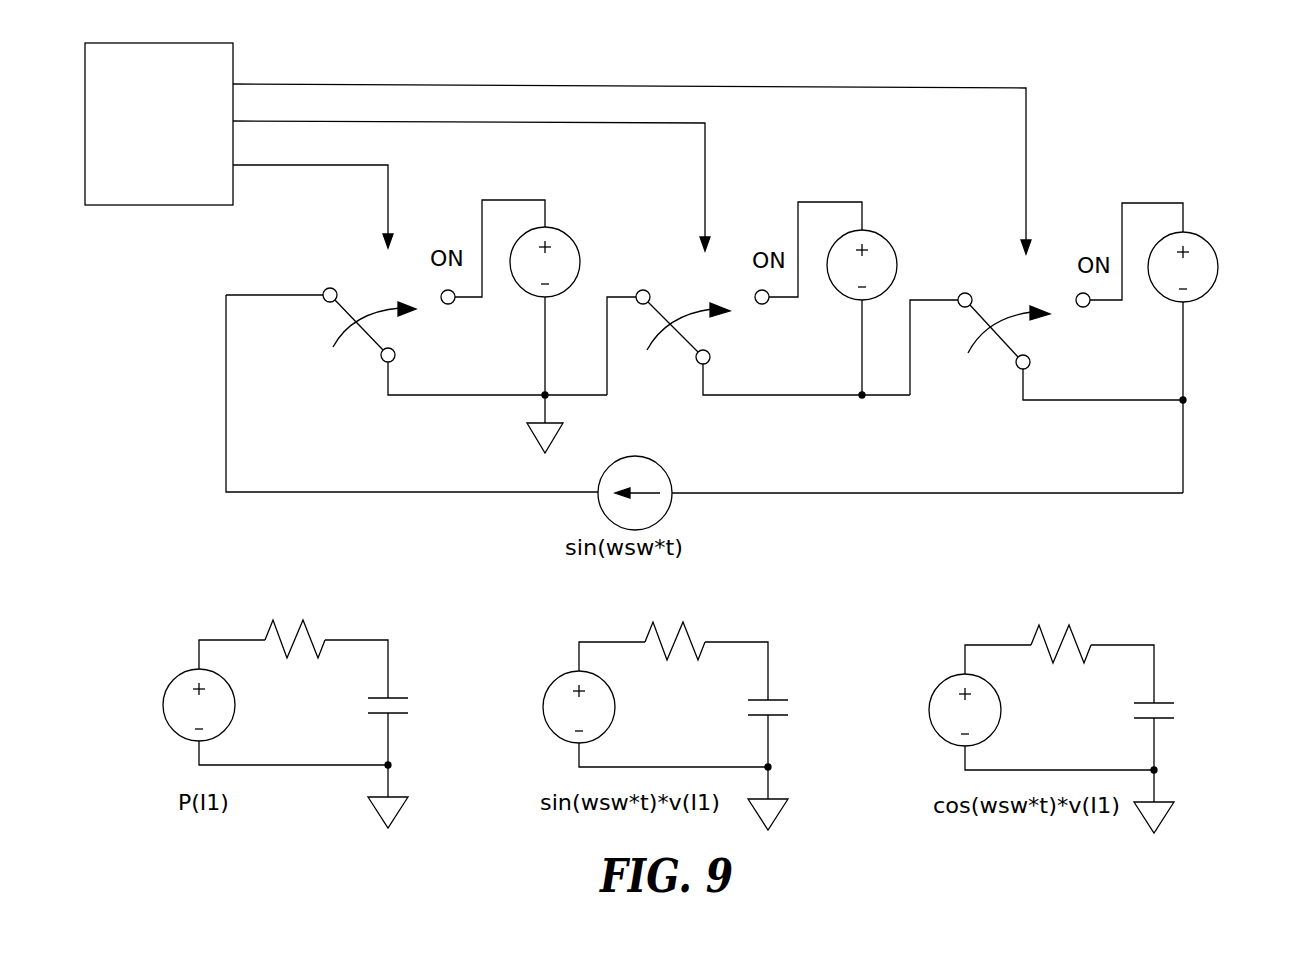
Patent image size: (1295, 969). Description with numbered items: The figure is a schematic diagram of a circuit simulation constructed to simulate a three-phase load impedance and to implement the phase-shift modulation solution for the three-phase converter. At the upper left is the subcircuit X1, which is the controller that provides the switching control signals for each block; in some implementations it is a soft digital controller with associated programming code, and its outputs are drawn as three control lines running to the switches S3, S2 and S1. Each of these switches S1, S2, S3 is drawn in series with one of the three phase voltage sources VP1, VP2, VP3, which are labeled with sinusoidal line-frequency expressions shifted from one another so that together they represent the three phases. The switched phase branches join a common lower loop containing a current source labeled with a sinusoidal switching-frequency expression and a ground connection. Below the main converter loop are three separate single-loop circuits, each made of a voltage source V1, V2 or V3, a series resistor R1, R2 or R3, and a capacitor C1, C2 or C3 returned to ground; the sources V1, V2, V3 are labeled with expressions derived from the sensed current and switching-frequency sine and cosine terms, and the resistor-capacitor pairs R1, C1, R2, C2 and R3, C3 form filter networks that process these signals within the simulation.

The subcircuit X1 is at (159, 124).
The switch S1 is at (1067, 346).
The switch S2 is at (770, 342).
The switch S3 is at (416, 341).
The phase voltage source 340 sin(wline*t) VP1 is at (1167, 232).
The phase voltage source 340 sin(wline*t-120) VP2 is at (857, 230).
The phase voltage source 340 sin(wline*t-240) VP3 is at (527, 227).
The resistor R1 (5e+3) R1 is at (291, 640).
The resistor R2 (5e+3) R2 is at (671, 642).
The resistor R3 (5e+3) R3 is at (1057, 645).
The capacitor C1 (10e-9) C1 is at (405, 707).
The capacitor C2 (10e-9) C2 is at (785, 709).
The capacitor C3 (10e-9) C3 is at (1171, 712).
The voltage source V1 = P(I1) V1 is at (218, 705).
The voltage source V2 = sin(wsw*t)*v(I1) V2 is at (598, 707).
The voltage source V3 = cos(wsw*t)*v(I1) V3 is at (984, 710).